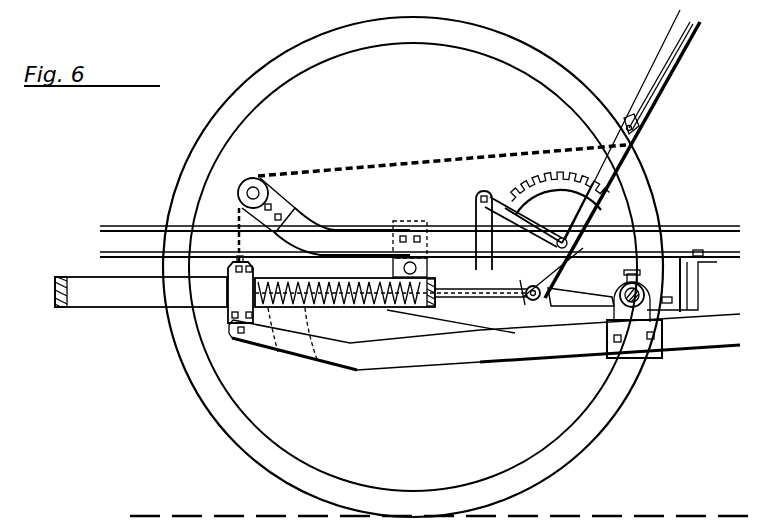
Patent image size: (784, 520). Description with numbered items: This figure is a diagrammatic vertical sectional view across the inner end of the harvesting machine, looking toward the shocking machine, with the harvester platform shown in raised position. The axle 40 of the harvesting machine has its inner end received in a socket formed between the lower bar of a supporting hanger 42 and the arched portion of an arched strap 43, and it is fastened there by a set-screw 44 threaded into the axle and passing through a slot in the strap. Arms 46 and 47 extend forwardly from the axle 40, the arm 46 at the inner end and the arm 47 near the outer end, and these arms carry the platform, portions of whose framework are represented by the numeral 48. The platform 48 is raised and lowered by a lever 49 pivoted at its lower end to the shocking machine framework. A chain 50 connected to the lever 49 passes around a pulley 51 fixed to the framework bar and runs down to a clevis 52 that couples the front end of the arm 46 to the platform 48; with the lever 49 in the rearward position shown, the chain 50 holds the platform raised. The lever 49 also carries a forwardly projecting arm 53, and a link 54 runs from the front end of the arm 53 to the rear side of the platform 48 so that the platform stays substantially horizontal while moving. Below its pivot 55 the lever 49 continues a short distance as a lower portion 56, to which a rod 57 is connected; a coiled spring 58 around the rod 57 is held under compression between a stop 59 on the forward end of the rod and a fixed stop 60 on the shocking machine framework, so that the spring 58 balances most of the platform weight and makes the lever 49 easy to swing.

The axle 40 is at (690, 262).
The supporting hanger 42 is at (688, 294).
The arched strap 43 is at (618, 290).
The set-screw 44 is at (637, 282).
The arm 46 is at (446, 358).
The arm 47 is at (150, 302).
The platform framework 48 is at (430, 310).
The lever 49 is at (635, 130).
The chain 50 is at (375, 168).
The pulley 51 is at (260, 178).
The clevis 52 is at (230, 326).
The forwardly projecting arm 53 is at (500, 198).
The link 54 is at (478, 197).
The pivot 55 is at (600, 214).
The lower portion of lever 56 is at (560, 308).
The rod 57 is at (528, 302).
The coiled spring 58 is at (345, 362).
The stop 59 is at (290, 342).
The fixed stop 60 is at (424, 228).